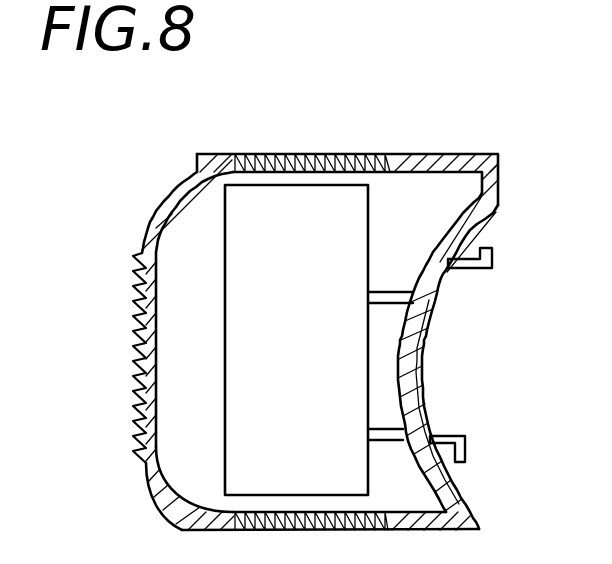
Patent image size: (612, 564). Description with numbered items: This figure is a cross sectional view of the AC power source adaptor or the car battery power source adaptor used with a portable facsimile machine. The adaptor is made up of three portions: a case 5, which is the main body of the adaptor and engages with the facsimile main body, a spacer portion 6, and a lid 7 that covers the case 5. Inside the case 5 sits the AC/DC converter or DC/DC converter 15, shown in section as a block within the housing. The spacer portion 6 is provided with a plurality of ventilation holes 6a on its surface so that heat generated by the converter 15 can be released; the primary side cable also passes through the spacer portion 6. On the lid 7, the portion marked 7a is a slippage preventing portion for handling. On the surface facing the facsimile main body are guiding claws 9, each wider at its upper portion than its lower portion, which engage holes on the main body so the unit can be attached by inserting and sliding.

The case 5 is at (497, 168).
The spacer portion 6 is at (279, 153).
The ventilation holes 6a is at (355, 153).
The lid 7 is at (150, 217).
The slippage preventing portion 7a is at (139, 337).
The guiding claws 9 is at (477, 277).
The AC/DC converter or DC/DC converter 15 is at (243, 220).